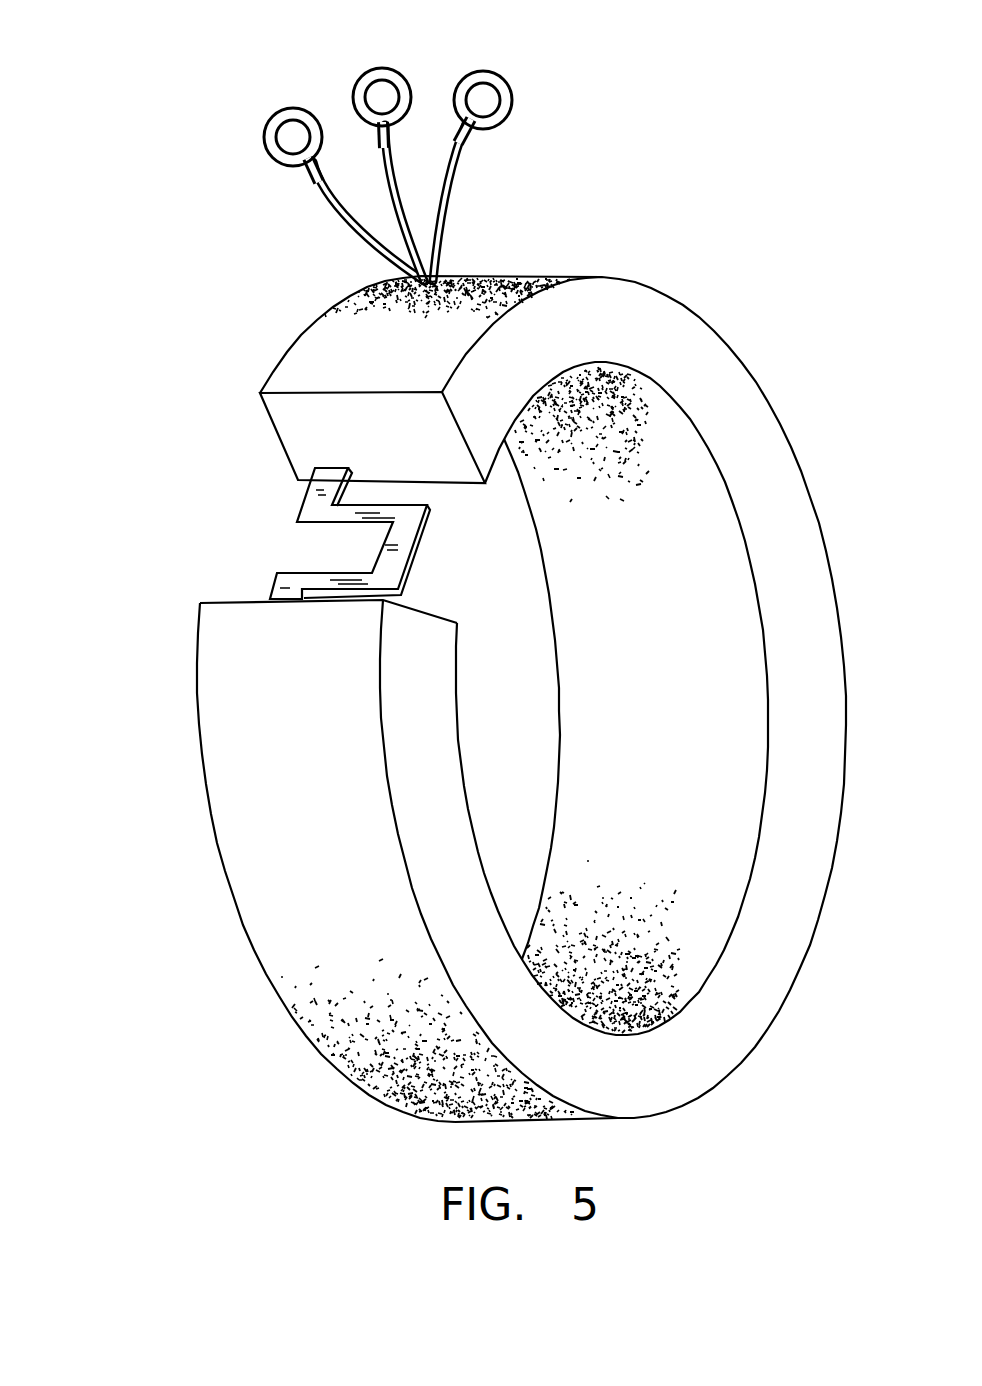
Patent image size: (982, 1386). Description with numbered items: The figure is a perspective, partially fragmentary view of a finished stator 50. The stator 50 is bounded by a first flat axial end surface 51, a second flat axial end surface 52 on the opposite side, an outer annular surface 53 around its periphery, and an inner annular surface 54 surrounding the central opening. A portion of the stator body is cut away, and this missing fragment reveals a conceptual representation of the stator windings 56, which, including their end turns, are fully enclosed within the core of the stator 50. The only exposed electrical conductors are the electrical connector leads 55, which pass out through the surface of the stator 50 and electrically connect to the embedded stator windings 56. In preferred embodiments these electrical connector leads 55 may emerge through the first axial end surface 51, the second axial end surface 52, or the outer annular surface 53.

The stator 50 is at (715, 207).
The first flat axial end surface 51 is at (662, 1082).
The second flat axial end surface 52 is at (237, 910).
The outer annular surface 53 is at (357, 1043).
The inner annular surface 54 is at (640, 493).
The electrical connector leads 55 is at (282, 112).
The stator windings 56 is at (297, 511).